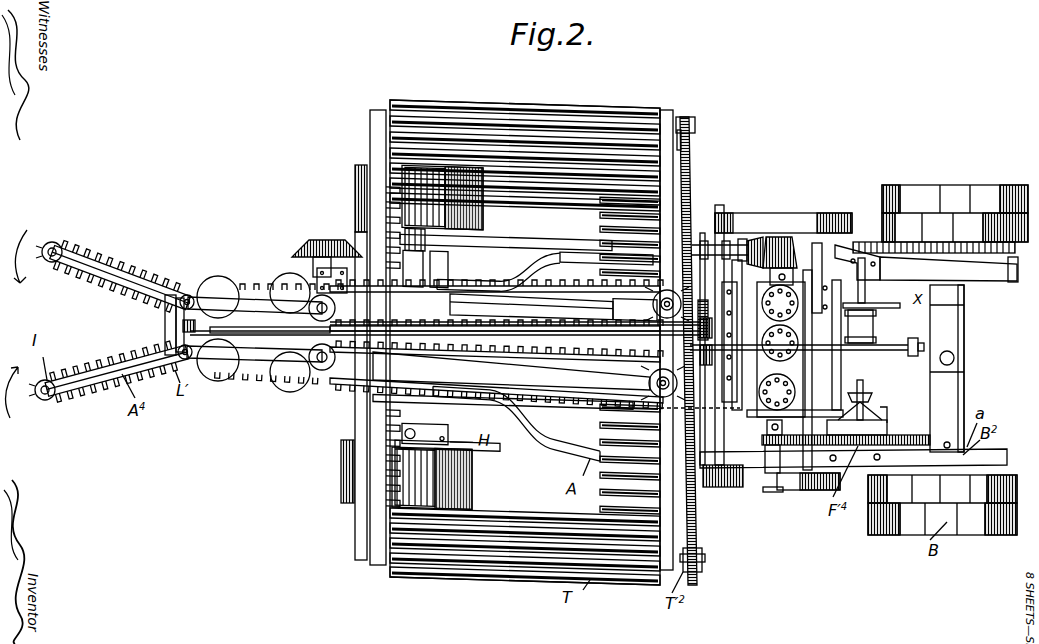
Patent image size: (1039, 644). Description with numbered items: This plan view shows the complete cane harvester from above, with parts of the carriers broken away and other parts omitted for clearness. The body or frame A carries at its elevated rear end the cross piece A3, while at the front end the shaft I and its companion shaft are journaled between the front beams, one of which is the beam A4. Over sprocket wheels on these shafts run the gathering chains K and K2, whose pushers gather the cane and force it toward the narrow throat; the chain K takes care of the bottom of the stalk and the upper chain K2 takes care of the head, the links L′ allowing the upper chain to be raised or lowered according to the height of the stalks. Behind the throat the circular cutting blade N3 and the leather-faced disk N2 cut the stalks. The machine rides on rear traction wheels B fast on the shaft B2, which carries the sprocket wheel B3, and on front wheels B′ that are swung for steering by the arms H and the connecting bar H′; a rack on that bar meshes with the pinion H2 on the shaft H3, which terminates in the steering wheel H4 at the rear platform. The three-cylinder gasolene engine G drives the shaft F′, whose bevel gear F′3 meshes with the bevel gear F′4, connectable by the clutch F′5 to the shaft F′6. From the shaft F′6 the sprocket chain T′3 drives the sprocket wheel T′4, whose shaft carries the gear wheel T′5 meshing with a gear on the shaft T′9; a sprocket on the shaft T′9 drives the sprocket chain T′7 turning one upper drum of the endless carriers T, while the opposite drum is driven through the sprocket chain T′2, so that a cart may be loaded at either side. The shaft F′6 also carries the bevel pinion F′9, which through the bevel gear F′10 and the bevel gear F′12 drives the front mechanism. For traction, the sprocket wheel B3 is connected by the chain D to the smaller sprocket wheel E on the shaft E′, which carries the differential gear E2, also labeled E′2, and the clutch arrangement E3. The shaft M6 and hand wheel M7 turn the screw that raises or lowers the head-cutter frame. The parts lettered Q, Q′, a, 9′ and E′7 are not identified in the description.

The endless carrier T is at (636, 108).
The sprocket chain T′2 is at (693, 158).
The sprocket chain T′3 is at (680, 292).
The sprocket wheel T′4 is at (712, 385).
The gear wheel T′5 is at (706, 318).
The sprocket chain T′7 is at (703, 550).
The shaft T′9 is at (690, 400).
The frame A is at (590, 243).
The cross piece A3 is at (966, 345).
The beam A4 is at (100, 272).
The shaft I is at (52, 242).
The chain K is at (90, 353).
The chain K2 is at (148, 275).
The link L′ is at (203, 290).
The disk N2 is at (220, 372).
The circular cutting blade N3 is at (230, 287).
The gear Q is at (272, 285).
The gear Q′ is at (266, 390).
The rear traction wheel B is at (960, 193).
The front wheel B′ is at (350, 177).
The shaft B2 is at (937, 265).
The sprocket wheel B3 is at (1005, 268).
The chain D is at (907, 242).
The sprocket wheel E is at (788, 211).
The shaft E′ is at (867, 289).
The differential gear E2 is at (874, 331).
The clutch arrangement E3 is at (884, 428).
The differential gear E′2 is at (734, 225).
The shaft collars E′7 is at (702, 241).
The shaft F′ is at (772, 490).
The bevel gear F′3 is at (840, 243).
The bevel gear F′4 is at (778, 236).
The clutch F′5 is at (765, 240).
The shaft F′6 is at (507, 243).
The bevel pinion F′9 is at (350, 238).
The bevel gear F′10 is at (325, 247).
The bevel gear F′12 is at (763, 445).
The engine G is at (782, 365).
The arm H is at (473, 227).
The connecting bar H′ is at (448, 436).
The pinion H2 is at (450, 290).
The shaft H3 is at (560, 292).
The steering wheel H4 is at (836, 280).
The shaft M6 is at (932, 345).
The hand wheel M7 is at (933, 380).
The hole a is at (955, 352).
The hatched block 9′ is at (340, 455).